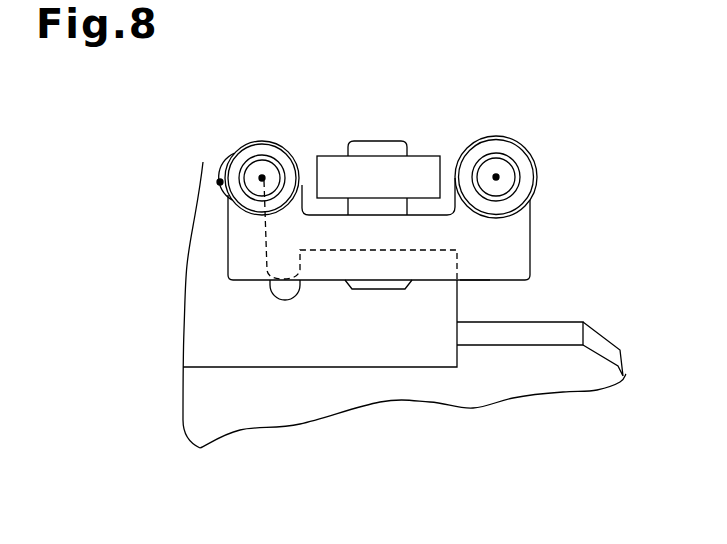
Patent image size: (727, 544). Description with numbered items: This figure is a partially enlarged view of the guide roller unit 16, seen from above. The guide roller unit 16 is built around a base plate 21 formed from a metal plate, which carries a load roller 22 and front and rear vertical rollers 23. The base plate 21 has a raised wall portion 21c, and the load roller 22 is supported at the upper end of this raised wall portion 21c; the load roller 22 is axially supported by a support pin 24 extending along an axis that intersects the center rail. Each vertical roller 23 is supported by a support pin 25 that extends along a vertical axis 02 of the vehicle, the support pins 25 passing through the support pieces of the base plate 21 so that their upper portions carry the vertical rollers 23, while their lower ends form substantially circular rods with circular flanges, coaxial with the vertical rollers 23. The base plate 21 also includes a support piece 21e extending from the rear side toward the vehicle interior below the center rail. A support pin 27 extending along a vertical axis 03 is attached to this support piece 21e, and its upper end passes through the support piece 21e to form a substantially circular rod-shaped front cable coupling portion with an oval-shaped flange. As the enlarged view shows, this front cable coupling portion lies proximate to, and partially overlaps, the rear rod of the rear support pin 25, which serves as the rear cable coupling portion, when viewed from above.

The guide roller unit 16 is at (192, 391).
The base plate 21 is at (585, 362).
The raised wall portion 21c is at (473, 282).
The support piece 21e is at (197, 227).
The load roller 22 is at (430, 167).
The vertical roller 23 is at (237, 146).
The support pin 24 is at (377, 290).
The support pin 25 is at (264, 177).
The support pin 27 is at (205, 188).
The axis O2 02 is at (262, 176).
The axis O3 03 is at (220, 181).